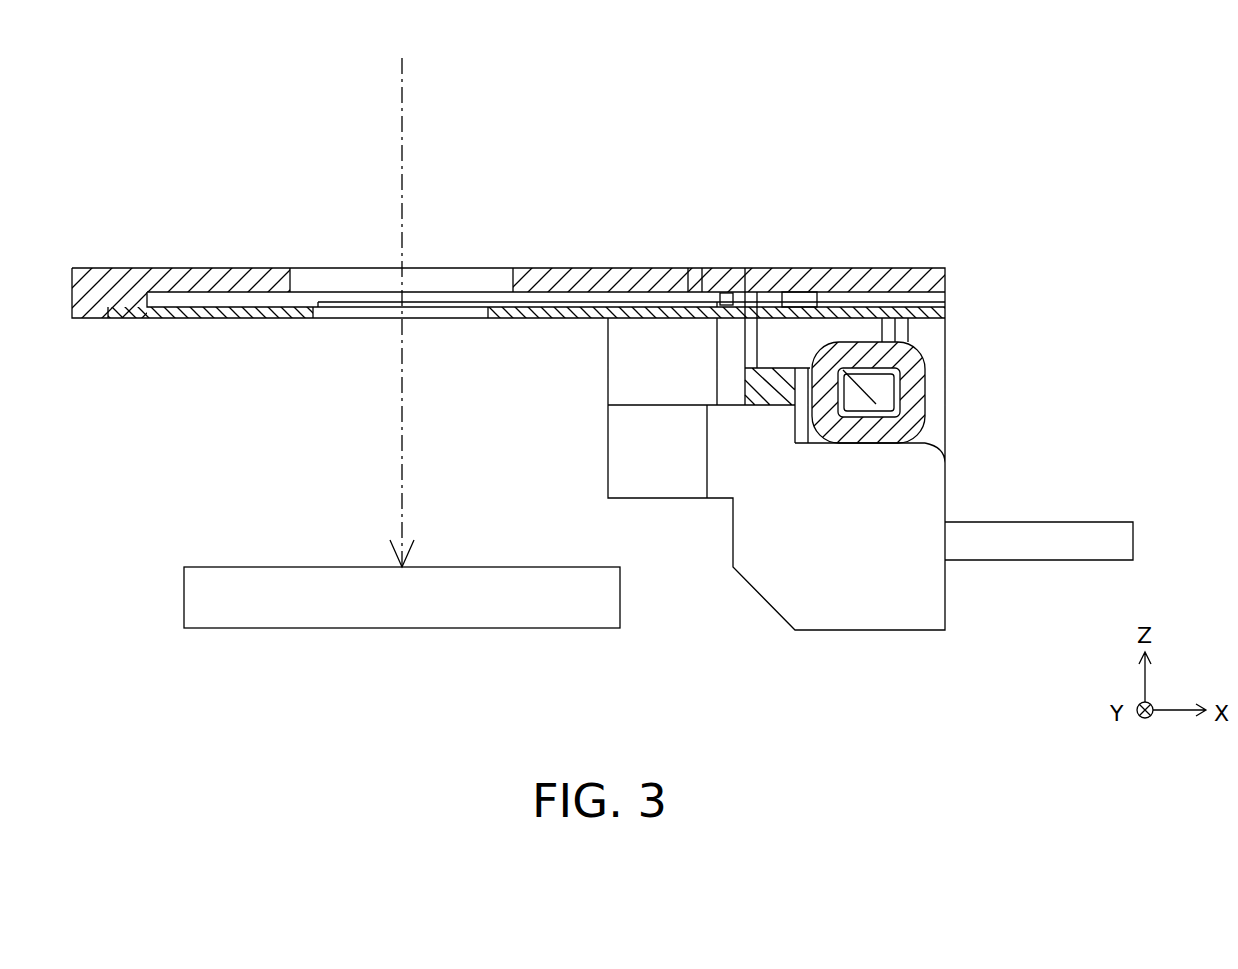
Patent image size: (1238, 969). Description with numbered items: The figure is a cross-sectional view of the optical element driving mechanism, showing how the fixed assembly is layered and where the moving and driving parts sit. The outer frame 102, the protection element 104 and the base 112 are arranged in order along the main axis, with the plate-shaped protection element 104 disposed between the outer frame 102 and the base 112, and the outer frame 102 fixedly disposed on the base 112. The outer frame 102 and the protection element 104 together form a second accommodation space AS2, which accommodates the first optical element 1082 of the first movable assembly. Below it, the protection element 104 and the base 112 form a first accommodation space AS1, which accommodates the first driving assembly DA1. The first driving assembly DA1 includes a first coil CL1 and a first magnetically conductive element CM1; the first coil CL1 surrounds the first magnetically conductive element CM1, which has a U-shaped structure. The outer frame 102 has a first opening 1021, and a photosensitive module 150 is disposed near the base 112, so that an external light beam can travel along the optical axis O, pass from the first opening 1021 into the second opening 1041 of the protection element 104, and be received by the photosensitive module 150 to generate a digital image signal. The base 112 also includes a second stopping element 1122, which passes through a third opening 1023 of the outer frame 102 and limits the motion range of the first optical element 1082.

The optical axis O is at (402, 299).
The outer frame 102 is at (912, 268).
The first opening 1021 is at (298, 268).
The second accommodation space AS2 is at (551, 290).
The first optical element 1082 is at (650, 304).
The second stopping element 1122 is at (727, 293).
The third opening 1023 is at (763, 268).
The first accommodation space AS1 is at (792, 325).
The protection element 104 is at (935, 312).
The second opening 1041 is at (320, 318).
The base 112 is at (923, 485).
The first driving assembly DA1 is at (980, 392).
The first coil CL1 is at (922, 375).
The first magnetically conductive element CM1 is at (877, 390).
The photosensitive module 150 is at (215, 598).